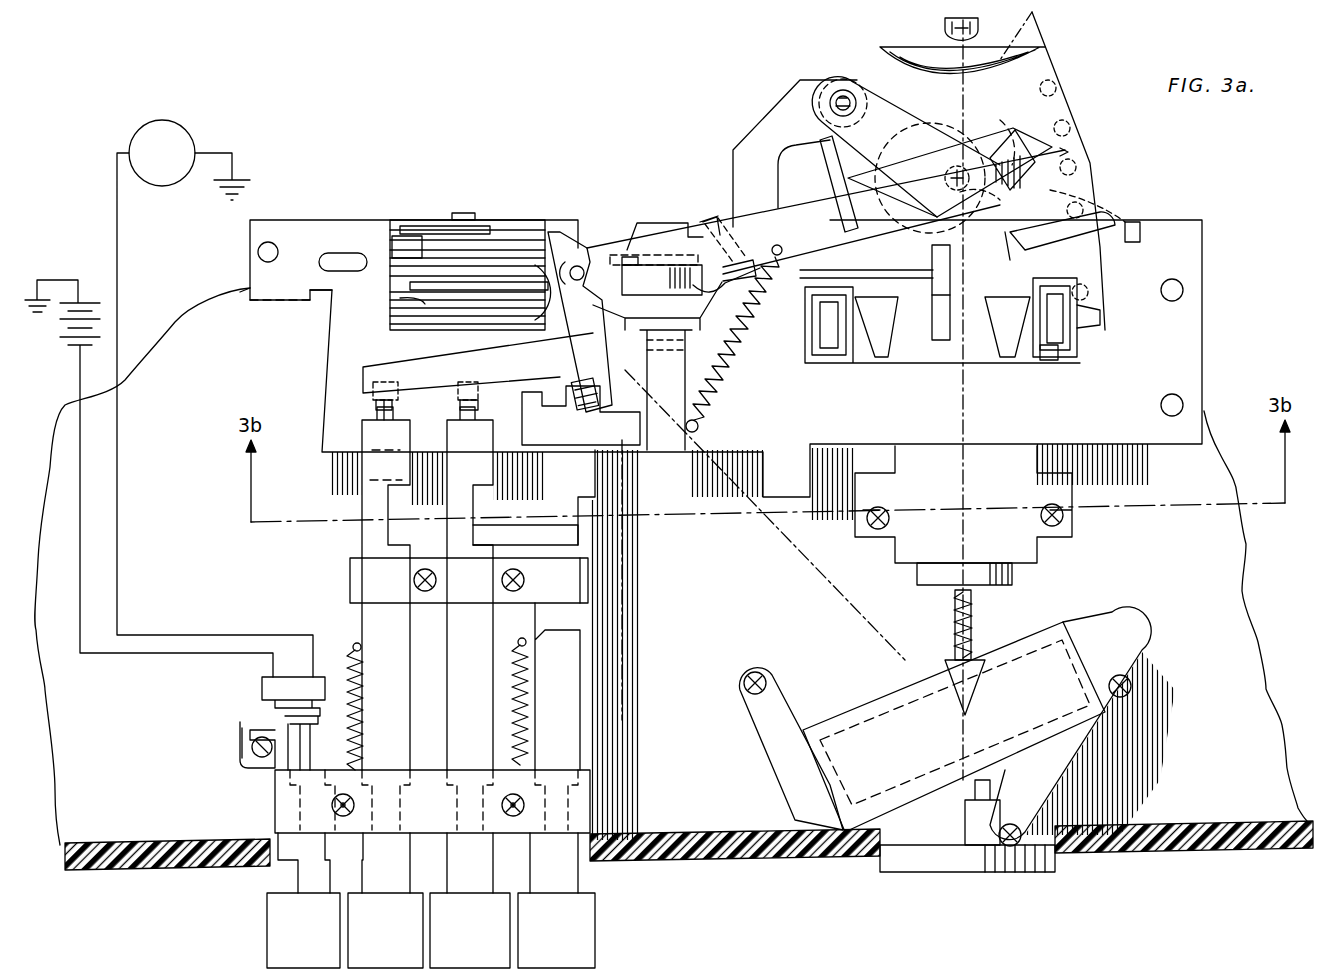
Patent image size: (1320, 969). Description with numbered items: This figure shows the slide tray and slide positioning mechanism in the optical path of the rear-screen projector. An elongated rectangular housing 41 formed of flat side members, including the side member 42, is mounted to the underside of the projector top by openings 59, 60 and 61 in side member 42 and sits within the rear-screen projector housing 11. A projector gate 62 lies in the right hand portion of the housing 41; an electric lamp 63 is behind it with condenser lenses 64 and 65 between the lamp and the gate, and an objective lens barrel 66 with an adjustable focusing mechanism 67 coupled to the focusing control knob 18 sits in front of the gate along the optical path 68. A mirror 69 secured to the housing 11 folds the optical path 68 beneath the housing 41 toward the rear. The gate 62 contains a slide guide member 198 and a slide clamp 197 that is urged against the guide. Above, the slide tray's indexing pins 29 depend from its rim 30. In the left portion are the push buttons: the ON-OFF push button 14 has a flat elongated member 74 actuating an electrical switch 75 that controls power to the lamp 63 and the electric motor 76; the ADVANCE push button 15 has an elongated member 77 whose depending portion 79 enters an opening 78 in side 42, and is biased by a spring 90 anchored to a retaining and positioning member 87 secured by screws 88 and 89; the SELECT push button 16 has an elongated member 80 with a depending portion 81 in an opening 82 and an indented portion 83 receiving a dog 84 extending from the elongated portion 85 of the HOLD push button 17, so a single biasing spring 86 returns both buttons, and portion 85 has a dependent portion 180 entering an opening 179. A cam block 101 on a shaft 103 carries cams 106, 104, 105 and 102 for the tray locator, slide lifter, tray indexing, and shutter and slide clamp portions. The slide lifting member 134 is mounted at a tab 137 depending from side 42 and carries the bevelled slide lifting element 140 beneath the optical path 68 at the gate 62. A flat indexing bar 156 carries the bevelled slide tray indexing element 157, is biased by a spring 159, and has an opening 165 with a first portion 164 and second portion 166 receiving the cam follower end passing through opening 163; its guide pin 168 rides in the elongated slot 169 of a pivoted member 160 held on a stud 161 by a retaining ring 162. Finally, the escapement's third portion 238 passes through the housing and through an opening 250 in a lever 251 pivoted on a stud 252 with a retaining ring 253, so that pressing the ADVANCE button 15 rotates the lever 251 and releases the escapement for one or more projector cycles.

The rear-screen projector housing 11 is at (1215, 855).
The ON-OFF push button 14 is at (266, 956).
The ADVANCE push button 15 is at (390, 915).
The SELECT push button 16 is at (478, 915).
The HOLD push button 17 is at (575, 918).
The focusing control knob 18 is at (1018, 874).
The indexing pins 29 is at (1122, 222).
The rim 30 is at (1093, 149).
The rectangular housing 41 is at (1218, 306).
The side member 42 is at (330, 300).
The opening 59 is at (1182, 283).
The opening 60 is at (1172, 394).
The opening 61 is at (257, 250).
The projector gate 62 is at (928, 356).
The electric lamp 63 is at (945, 27).
The condenser lens 64 is at (1040, 55).
The condenser lens 65 is at (1005, 110).
The objective lens barrel 66 is at (1015, 572).
The adjustable focusing mechanism 67 is at (992, 628).
The optical path 68 is at (968, 428).
The mirror 69 is at (1095, 735).
The flat elongated member 74 is at (270, 880).
The electrical switch 75 is at (273, 760).
The electric motor 76 is at (193, 137).
The elongated member 77 is at (362, 625).
The opening 78 is at (376, 404).
The depending portion 79 is at (388, 403).
The elongated member 80 is at (440, 470).
The depending portion 81 is at (478, 398).
The opening 82 is at (462, 386).
The indented portion 83 is at (486, 470).
The dog 84 is at (512, 525).
The elongated portion 85 is at (580, 527).
The biasing spring 86 is at (530, 706).
The retaining and positioning member 87 is at (592, 800).
The screw 88 is at (505, 797).
The screw 89 is at (350, 796).
The spring 90 is at (363, 708).
The cam block 101 is at (496, 236).
The cam 102 is at (425, 300).
The shaft 103 is at (460, 213).
The cam 104 is at (410, 286).
The cam 105 is at (425, 256).
The cam 106 is at (395, 228).
The slide lifting member 134 is at (834, 250).
The tab 137 is at (240, 298).
The bevelled slide lifting element 140 is at (950, 268).
The indexing bar 156 is at (815, 220).
The bevelled slide tray indexing element 157 is at (1067, 150).
The spring 159 is at (733, 362).
The pivoted member 160 is at (945, 105).
The stud 161 is at (836, 108).
The retaining ring 162 is at (846, 97).
The opening 163 is at (664, 242).
The first portion 164 is at (630, 250).
The opening 165 is at (668, 294).
The second portion 166 is at (700, 292).
The guide pin 168 is at (990, 212).
The elongated slot 169 is at (920, 141).
The opening 179 is at (645, 338).
The dependent portion 180 is at (668, 328).
The slide clamp 197 is at (1048, 358).
The slide guide member 198 is at (1080, 320).
The third portion 238 is at (585, 412).
The opening 250 is at (590, 380).
The lever 251 is at (378, 358).
The stud 252 is at (583, 266).
The retaining ring 253 is at (570, 244).